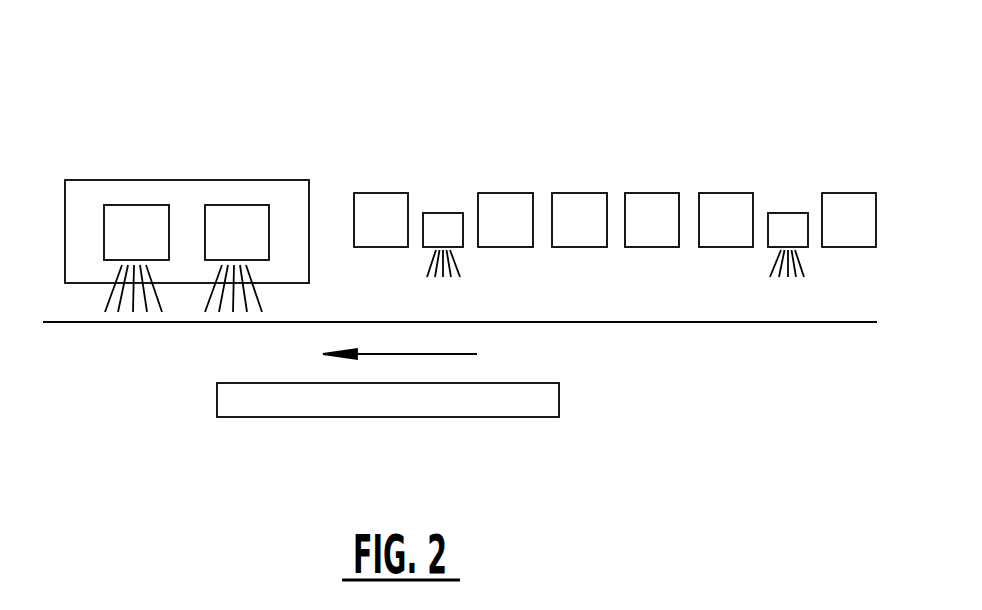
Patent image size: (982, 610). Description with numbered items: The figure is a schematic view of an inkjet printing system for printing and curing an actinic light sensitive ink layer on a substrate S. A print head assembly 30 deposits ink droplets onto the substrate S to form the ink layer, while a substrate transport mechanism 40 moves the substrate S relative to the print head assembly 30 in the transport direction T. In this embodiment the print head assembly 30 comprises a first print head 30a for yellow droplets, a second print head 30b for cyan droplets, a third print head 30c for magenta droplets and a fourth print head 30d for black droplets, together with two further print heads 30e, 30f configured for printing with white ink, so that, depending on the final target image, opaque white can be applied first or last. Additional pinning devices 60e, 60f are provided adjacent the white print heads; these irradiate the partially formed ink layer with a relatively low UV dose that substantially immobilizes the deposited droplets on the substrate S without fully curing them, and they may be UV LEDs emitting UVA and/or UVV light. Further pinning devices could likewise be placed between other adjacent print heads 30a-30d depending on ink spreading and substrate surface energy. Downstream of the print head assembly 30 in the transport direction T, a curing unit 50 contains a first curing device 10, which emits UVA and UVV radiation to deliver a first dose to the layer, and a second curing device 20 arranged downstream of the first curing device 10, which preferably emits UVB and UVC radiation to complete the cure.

The first curing device 10 is at (247, 213).
The second curing device 20 is at (137, 215).
The print head assembly 30 is at (590, 160).
The first print head 30a is at (733, 247).
The second print head 30b is at (660, 247).
The third print head 30c is at (587, 247).
The fourth print head 30d is at (512, 247).
The print head 30e is at (385, 247).
The print head 30f is at (853, 247).
The substrate transport mechanism 40 is at (217, 400).
The curing unit 50 is at (82, 192).
The pinning device 60e is at (447, 223).
The pinning device 60f is at (787, 220).
The substrate S is at (672, 323).
The transport direction T is at (391, 353).